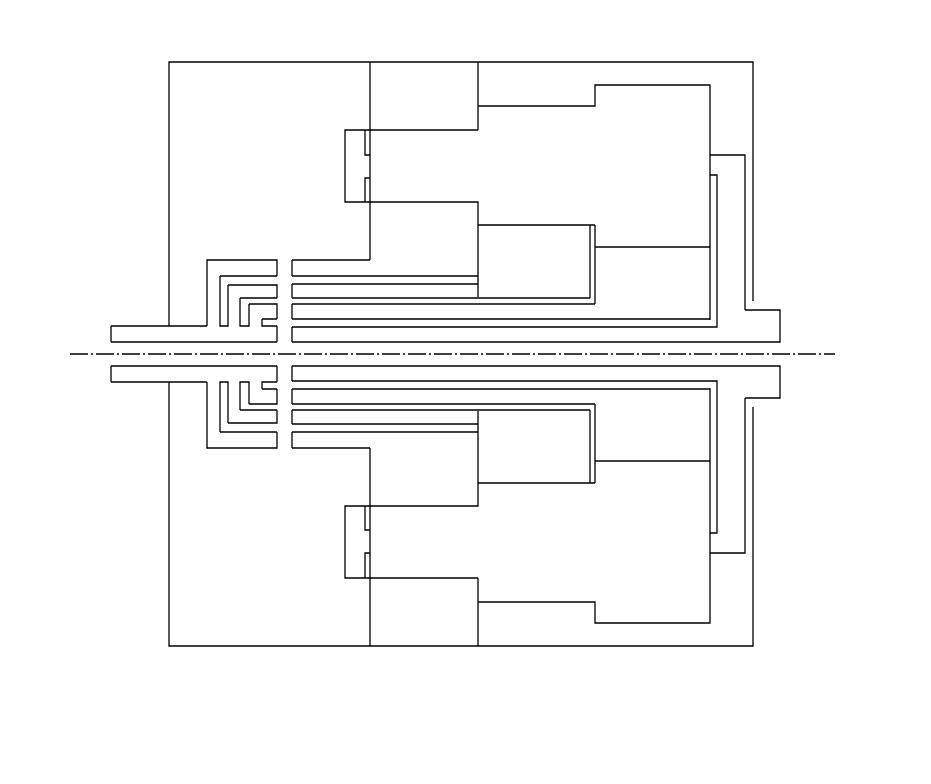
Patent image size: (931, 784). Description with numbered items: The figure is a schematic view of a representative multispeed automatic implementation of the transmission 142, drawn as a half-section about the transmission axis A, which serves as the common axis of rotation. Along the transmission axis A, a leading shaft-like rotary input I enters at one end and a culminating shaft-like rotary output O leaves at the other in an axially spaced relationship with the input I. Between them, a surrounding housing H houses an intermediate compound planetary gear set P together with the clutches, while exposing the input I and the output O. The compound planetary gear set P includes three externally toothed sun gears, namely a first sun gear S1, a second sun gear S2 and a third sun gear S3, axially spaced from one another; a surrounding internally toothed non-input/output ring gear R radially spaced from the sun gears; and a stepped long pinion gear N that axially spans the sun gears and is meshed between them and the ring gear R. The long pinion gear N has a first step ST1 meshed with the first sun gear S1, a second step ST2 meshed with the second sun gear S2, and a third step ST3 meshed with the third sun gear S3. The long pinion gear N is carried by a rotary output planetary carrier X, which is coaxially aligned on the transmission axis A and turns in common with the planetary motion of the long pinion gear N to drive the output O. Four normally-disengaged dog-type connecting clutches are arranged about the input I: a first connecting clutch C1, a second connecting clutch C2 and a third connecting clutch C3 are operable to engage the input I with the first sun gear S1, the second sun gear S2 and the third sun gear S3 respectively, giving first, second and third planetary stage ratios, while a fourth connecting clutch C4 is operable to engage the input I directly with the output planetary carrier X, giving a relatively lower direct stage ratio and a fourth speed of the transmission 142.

The transmission 142 is at (436, 375).
The housing H is at (160, 106).
The compound planetary gear set P is at (438, 175).
The non-input/output ring gear R is at (424, 161).
The stepped long pinion gear N is at (594, 202).
The third step ST3 is at (411, 213).
The second step ST2 is at (536, 251).
The first step ST1 is at (652, 234).
The third sun gear S3 is at (385, 252).
The second sun gear S2 is at (441, 277).
The first sun gear S1 is at (501, 296).
The output planetary carrier X is at (518, 248).
The rotary output O is at (762, 309).
The rotary input I is at (112, 326).
The first connecting clutch C1 is at (273, 305).
The second connecting clutch C2 is at (272, 285).
The third connecting clutch C3 is at (255, 260).
The fourth connecting clutch C4 is at (272, 333).
The transmission axis A is at (88, 357).